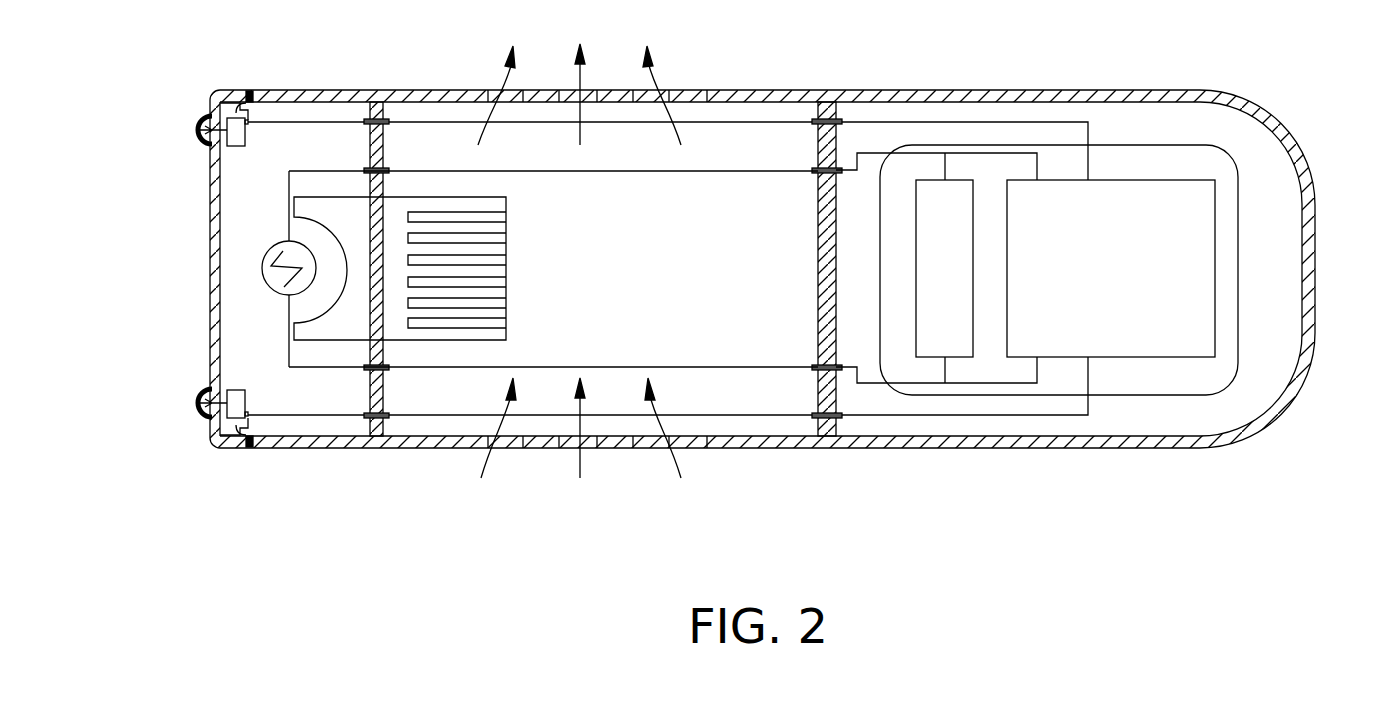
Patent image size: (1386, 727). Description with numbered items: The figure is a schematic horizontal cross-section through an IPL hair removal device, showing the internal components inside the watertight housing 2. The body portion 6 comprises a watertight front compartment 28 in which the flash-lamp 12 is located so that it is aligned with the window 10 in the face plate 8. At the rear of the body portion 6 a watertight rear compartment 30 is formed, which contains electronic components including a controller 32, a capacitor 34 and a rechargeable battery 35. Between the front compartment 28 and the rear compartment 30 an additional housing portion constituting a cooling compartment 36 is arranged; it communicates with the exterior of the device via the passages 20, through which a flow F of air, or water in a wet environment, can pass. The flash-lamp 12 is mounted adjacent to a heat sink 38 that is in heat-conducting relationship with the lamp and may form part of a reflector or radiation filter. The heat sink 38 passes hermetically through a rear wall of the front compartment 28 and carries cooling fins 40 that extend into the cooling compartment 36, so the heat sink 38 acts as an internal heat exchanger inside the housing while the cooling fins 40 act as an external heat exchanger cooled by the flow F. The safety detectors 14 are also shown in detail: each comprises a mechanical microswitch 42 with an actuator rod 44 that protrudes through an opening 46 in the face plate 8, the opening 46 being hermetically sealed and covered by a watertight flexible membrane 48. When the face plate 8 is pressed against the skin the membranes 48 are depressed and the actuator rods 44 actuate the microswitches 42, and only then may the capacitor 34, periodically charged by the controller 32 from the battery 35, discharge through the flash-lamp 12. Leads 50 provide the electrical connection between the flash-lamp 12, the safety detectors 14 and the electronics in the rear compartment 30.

The watertight housing 2 is at (1280, 405).
The body portion 6 is at (968, 92).
The face plate 8 is at (222, 90).
The window 10 is at (210, 330).
The flash-lamp 12 is at (264, 265).
The safety detector 14 is at (205, 405).
The passages 20 is at (566, 94).
The watertight front compartment 28 is at (313, 150).
The watertight rear compartment 30 is at (1158, 125).
The controller 32 is at (1186, 268).
The capacitor 34 is at (937, 330).
The rechargeable battery 35 is at (1140, 395).
The cooling compartment 36 is at (730, 385).
The heat sink 38 is at (353, 217).
The cooling fins 40 is at (443, 200).
The mechanical microswitch 42 is at (248, 138).
The actuator rod 44 is at (207, 140).
The opening 46 is at (210, 110).
The flexible membrane 48 is at (203, 127).
The leads 50 is at (468, 122).
The air flow F is at (580, 78).